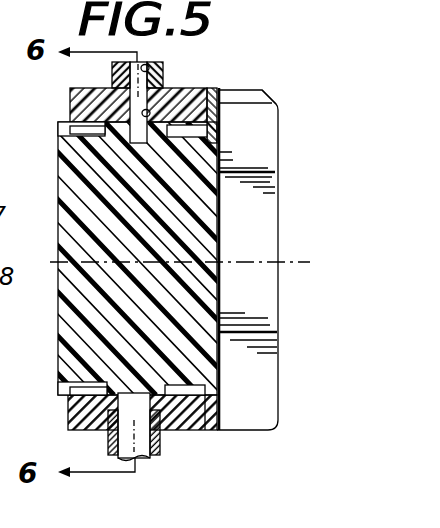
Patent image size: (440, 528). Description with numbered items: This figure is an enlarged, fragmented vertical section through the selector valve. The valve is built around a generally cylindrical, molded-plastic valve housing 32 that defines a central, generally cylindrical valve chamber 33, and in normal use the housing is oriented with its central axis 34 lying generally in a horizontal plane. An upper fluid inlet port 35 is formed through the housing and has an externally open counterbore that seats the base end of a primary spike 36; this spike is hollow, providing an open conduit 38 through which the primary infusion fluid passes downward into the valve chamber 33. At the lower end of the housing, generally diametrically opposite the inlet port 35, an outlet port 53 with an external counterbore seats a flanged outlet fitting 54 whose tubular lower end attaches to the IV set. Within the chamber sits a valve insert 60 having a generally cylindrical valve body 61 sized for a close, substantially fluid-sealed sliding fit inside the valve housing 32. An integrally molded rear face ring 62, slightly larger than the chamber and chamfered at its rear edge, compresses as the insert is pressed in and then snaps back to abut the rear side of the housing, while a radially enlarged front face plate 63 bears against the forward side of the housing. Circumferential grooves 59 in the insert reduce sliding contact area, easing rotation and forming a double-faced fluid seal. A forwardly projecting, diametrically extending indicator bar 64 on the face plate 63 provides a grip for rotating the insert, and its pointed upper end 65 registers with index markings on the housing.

The valve housing 32 is at (68, 418).
The valve chamber 33 is at (70, 383).
The central axis 34 is at (50, 262).
The upper fluid inlet port 35 is at (157, 90).
The primary spike 36 is at (112, 72).
The open conduit 38 is at (165, 65).
The outlet port 53 is at (140, 406).
The outlet fitting 54 is at (160, 457).
The circumferential grooves 59 is at (82, 131).
The valve insert 60 is at (228, 297).
The valve body 61 is at (73, 186).
The rear face ring 62 is at (62, 121).
The front face plate 63 is at (221, 399).
The indicator bar 64 is at (268, 178).
The pointed upper end 65 is at (238, 90).